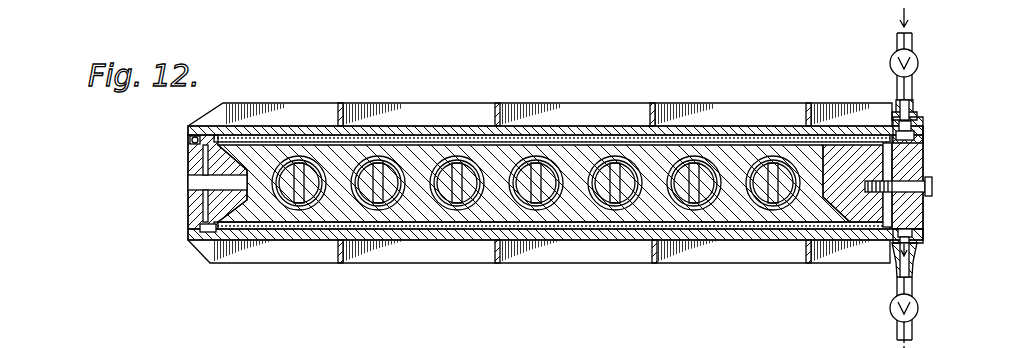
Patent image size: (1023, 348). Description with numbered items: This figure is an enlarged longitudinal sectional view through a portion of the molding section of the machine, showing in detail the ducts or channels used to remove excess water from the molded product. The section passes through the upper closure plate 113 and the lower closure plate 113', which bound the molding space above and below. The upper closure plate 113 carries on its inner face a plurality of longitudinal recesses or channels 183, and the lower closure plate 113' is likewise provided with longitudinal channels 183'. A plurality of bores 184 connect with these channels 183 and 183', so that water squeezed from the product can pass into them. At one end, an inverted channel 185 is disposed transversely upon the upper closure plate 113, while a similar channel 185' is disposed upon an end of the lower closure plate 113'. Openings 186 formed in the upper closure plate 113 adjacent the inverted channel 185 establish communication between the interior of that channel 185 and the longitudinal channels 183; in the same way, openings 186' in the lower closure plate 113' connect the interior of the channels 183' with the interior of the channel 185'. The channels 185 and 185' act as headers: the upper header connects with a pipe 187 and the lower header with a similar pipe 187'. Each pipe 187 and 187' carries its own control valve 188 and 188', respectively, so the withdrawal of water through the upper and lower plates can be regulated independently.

The upper closure plate 113 is at (555, 97).
The lower closure plate 113' is at (555, 268).
The longitudinal channels 183 is at (552, 100).
The longitudinal channels 183' is at (552, 265).
The bores 184 is at (186, 157).
The inverted channel 185 is at (942, 102).
The channel 185' is at (952, 260).
The openings 186 is at (943, 130).
The openings 186' is at (951, 223).
The pipe 187 is at (945, 54).
The pipe 187' is at (954, 312).
The control valve 188 is at (874, 65).
The control valve 188' is at (865, 305).